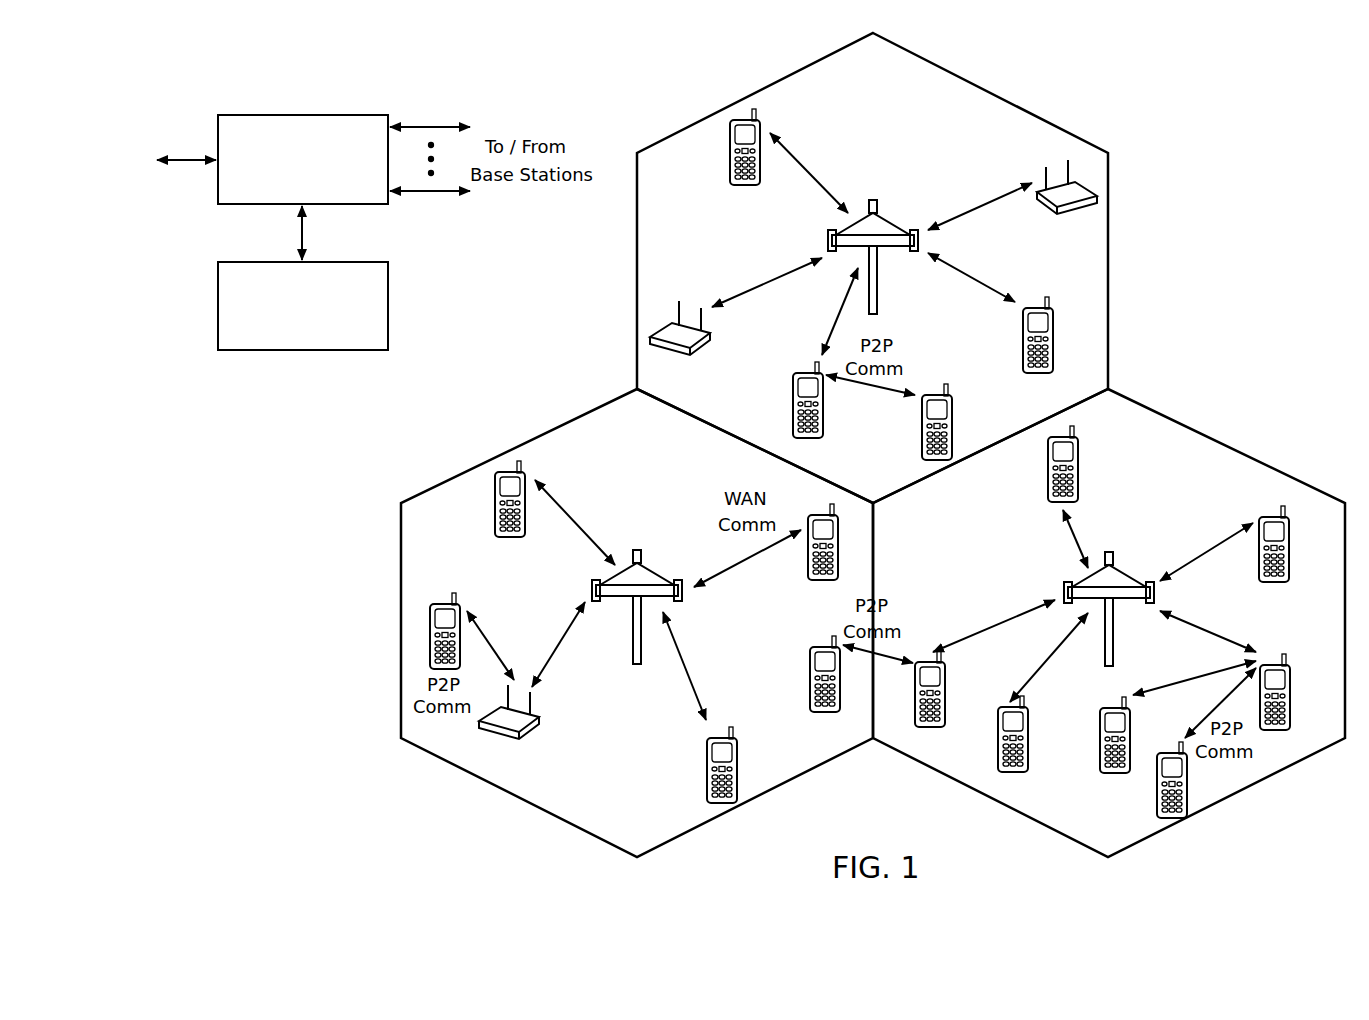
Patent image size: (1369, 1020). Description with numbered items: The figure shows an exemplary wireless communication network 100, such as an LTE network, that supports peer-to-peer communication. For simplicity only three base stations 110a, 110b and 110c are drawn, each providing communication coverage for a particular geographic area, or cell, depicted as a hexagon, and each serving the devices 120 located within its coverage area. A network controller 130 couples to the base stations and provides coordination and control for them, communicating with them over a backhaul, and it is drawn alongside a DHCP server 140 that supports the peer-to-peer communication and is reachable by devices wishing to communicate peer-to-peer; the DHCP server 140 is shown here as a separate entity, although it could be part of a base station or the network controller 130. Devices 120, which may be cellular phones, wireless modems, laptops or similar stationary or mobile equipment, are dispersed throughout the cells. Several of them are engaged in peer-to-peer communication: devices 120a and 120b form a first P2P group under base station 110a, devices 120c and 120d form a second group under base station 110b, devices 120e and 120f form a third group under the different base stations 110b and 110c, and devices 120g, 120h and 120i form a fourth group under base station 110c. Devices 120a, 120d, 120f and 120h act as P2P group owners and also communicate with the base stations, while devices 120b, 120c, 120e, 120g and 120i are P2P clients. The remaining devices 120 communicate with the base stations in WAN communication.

The wireless communication network 100 is at (1254, 138).
The base station 110a is at (877, 214).
The base station 110b is at (645, 566).
The base station 110c is at (1125, 567).
The device 120 is at (764, 118).
The device 120a is at (792, 402).
The device 120b is at (948, 393).
The device 120c is at (448, 603).
The device 120d is at (530, 742).
The device 120e is at (808, 662).
The device 120f is at (946, 680).
The device 120g is at (1115, 775).
The device 120h is at (1283, 662).
The device 120i is at (1155, 810).
The network controller 130 is at (318, 115).
The DHCP server 140 is at (333, 262).